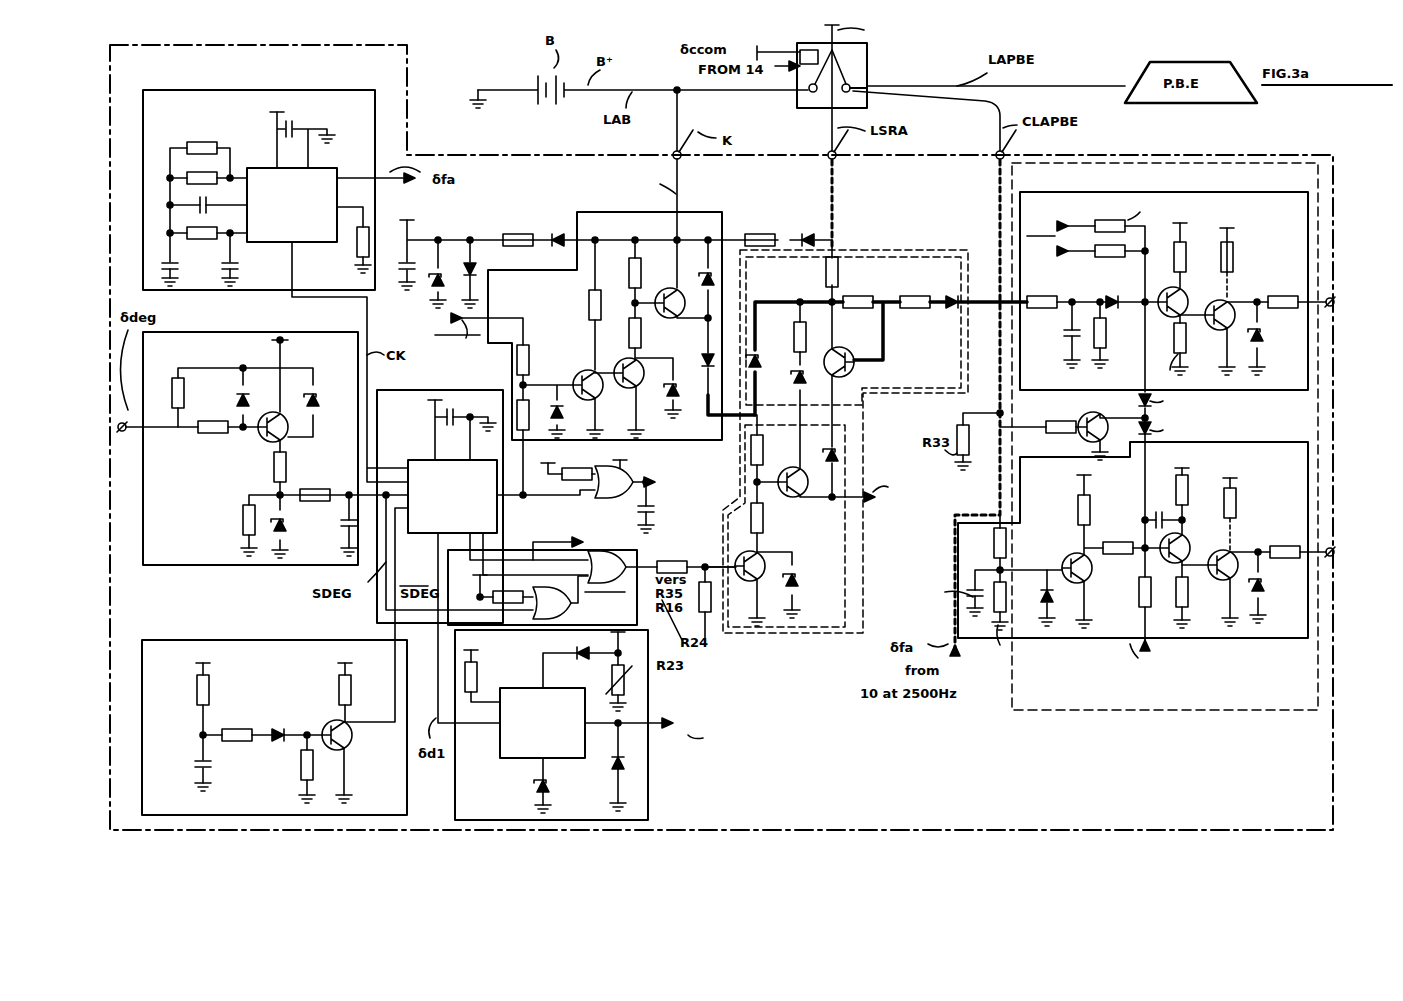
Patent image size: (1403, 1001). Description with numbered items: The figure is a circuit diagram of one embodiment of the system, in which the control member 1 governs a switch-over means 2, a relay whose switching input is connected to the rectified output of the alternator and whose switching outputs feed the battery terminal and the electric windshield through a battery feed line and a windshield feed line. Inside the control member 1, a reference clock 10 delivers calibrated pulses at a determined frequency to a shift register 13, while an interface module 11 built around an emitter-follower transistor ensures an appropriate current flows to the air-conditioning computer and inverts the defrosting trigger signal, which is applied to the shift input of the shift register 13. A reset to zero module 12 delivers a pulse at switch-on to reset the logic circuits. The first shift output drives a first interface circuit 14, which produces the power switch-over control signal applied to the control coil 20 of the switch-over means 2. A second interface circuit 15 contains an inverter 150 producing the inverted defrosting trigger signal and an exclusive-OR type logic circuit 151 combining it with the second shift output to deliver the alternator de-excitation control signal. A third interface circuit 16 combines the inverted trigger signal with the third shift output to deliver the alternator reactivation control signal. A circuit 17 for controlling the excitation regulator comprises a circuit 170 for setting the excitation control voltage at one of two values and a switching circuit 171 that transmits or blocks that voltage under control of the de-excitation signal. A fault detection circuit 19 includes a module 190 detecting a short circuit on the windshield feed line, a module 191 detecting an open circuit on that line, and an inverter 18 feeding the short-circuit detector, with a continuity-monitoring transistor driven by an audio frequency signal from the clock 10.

The control member 1 is at (1105, 814).
The switch-over means 2 is at (858, 57).
The control coil 20 is at (814, 46).
The reference clock 10 is at (342, 105).
The interface module 11 is at (318, 355).
The reset to zero module 12 is at (270, 664).
The shift register 13 is at (461, 402).
The first interface circuit 14 is at (638, 796).
The second interface circuit 15 is at (633, 546).
The inverter 150 is at (511, 590).
The exclusive-OR type logic circuit 151 is at (584, 567).
The third interface circuit 16 is at (600, 213).
The circuit for controlling the excitation regulator 17 is at (888, 271).
The circuit for setting the excitation control voltage 170 is at (886, 370).
The switching circuit 171 is at (790, 521).
The inverter 18 is at (608, 488).
The fault detection circuit 19 is at (1161, 173).
The module for detecting short circuiting 190 is at (1213, 200).
The module for detecting open circuit 191 is at (1233, 448).